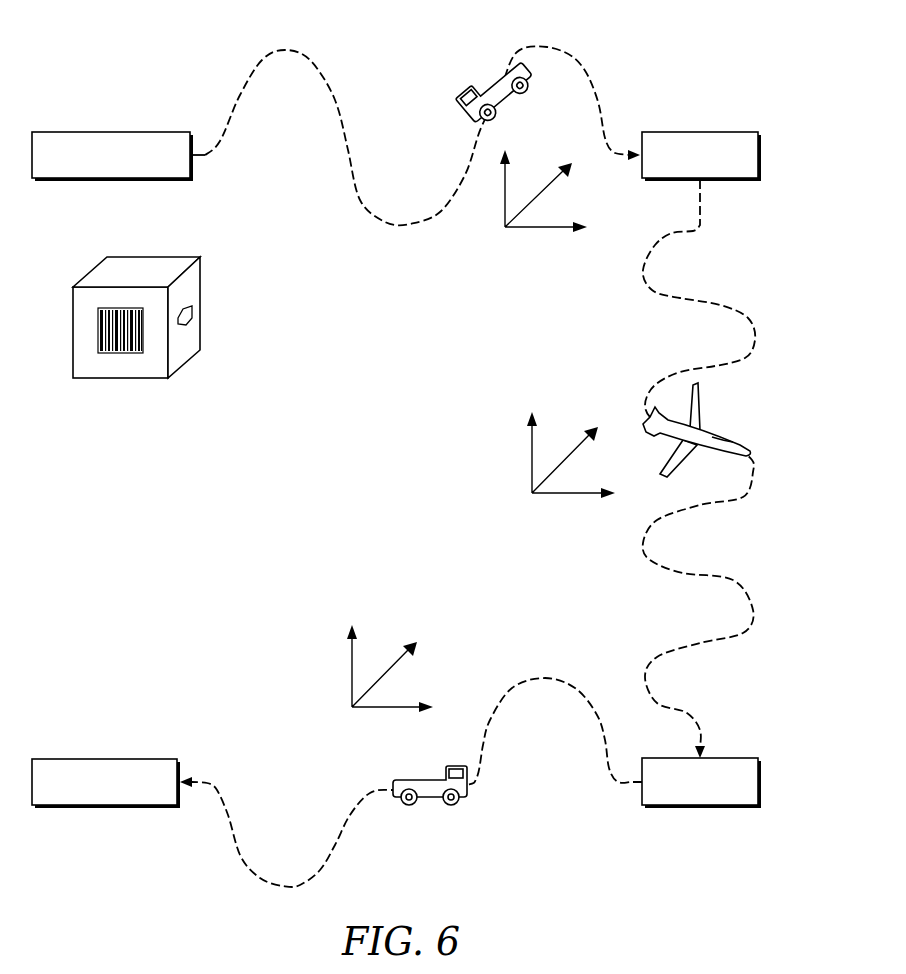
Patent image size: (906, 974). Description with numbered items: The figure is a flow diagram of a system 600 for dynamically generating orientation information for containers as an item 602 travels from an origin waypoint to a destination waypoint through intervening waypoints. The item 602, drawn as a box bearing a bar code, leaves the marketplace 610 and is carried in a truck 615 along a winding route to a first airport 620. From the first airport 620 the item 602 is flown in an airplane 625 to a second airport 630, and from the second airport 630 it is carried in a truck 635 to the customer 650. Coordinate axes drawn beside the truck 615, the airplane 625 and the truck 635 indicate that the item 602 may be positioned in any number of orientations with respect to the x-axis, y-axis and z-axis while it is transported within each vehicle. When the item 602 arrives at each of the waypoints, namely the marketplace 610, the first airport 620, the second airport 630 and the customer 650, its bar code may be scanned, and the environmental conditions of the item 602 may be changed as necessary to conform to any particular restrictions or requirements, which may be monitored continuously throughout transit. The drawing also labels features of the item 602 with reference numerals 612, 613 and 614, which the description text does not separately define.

The system 600 is at (100, 54).
The item 602 is at (161, 298).
The marketplace 610 is at (165, 132).
The package container 612 is at (92, 270).
The package label 613 is at (163, 257).
The package handle opening 614 is at (195, 316).
The truck 615 is at (462, 95).
The first airport 620 is at (752, 132).
The airplane 625 is at (703, 413).
The second airport 630 is at (752, 758).
The truck 635 is at (428, 800).
The customer 650 is at (165, 759).